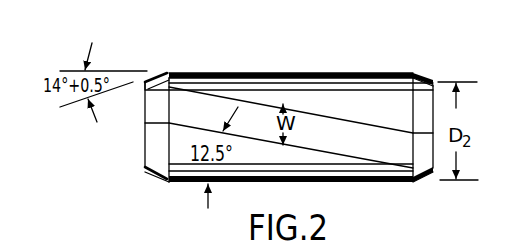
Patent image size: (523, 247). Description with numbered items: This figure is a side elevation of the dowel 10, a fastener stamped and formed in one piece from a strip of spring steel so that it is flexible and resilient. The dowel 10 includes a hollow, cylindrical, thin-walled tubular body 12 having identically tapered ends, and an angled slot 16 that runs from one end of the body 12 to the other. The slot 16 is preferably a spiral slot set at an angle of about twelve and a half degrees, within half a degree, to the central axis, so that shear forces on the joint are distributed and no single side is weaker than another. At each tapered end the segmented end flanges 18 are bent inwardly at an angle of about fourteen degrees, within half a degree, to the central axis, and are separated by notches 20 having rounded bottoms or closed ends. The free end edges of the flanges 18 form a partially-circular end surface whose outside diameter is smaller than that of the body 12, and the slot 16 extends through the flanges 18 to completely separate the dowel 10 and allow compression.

The dowel 10 is at (404, 60).
The tubular body 12 is at (317, 76).
The angled slot 16 is at (206, 83).
The segmented end flanges 18 is at (150, 108).
The notches 20 is at (416, 80).